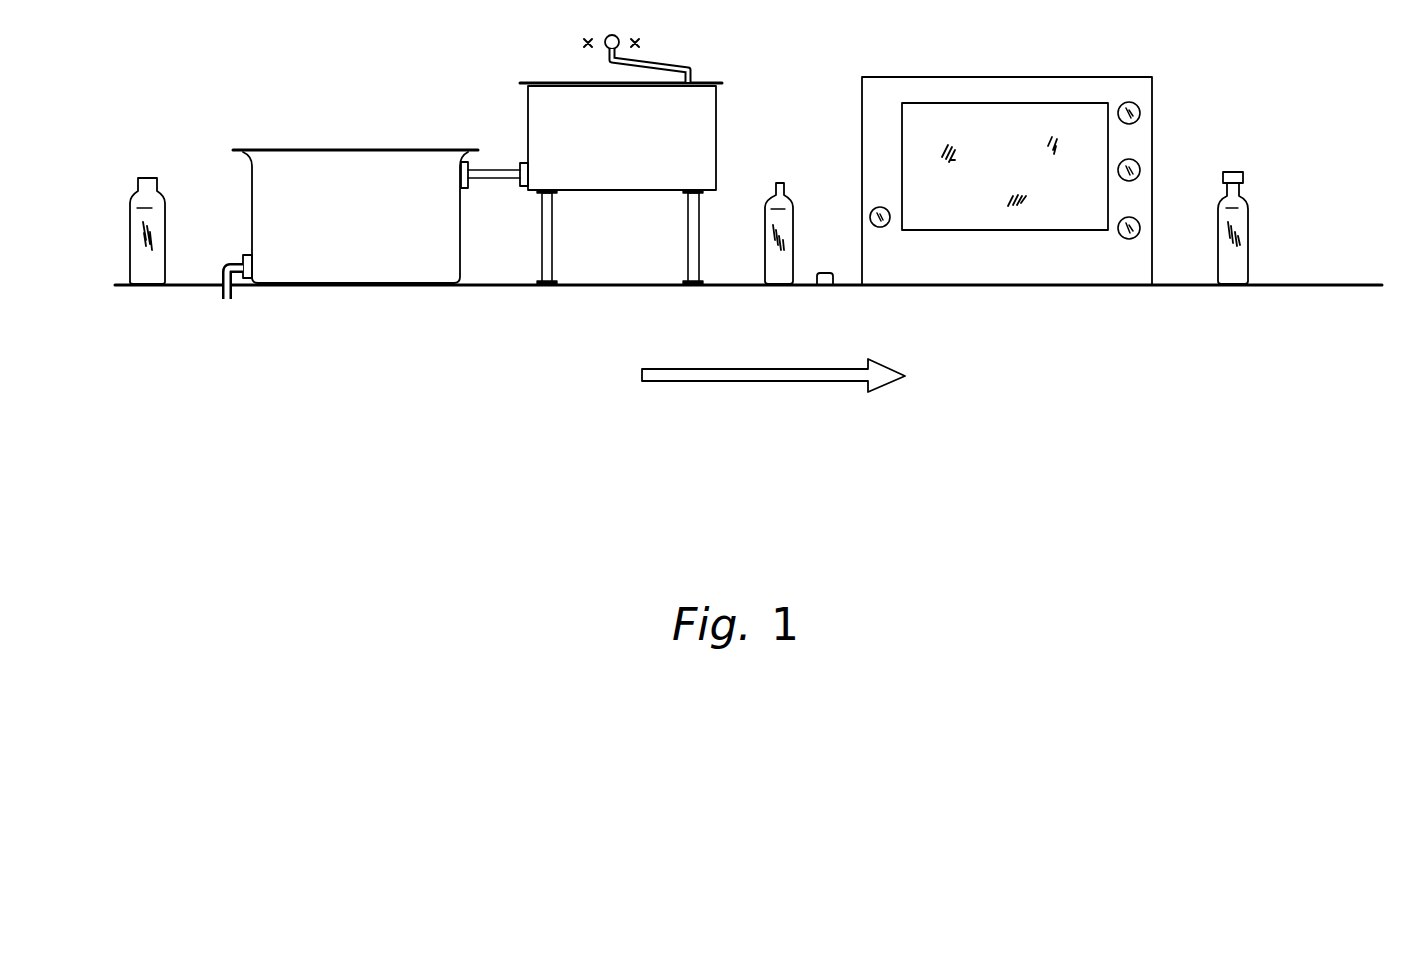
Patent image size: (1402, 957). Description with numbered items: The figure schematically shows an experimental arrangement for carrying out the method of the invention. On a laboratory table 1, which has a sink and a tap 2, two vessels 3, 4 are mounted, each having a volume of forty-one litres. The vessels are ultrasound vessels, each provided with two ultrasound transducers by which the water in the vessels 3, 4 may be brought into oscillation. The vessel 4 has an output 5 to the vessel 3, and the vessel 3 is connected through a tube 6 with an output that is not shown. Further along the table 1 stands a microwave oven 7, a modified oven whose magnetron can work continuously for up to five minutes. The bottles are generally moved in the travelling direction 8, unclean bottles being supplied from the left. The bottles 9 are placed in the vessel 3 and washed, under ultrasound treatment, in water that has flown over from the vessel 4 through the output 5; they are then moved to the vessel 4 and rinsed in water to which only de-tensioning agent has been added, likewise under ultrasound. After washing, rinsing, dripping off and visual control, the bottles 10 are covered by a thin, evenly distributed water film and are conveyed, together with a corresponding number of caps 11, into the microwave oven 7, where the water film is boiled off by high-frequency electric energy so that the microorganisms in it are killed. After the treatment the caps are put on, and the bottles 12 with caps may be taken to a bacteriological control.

The laboratory table 1 is at (1350, 275).
The tap 2 is at (617, 34).
The vessel 3 is at (296, 168).
The vessel 4 is at (693, 113).
The output 5 is at (487, 172).
The tube 6 is at (229, 302).
The microwave oven 7 is at (1008, 85).
The travelling direction 8 is at (738, 375).
The bottles 9 is at (138, 218).
The bottles 10 is at (788, 215).
The caps 11 is at (822, 272).
The bottles with caps 12 is at (1240, 215).